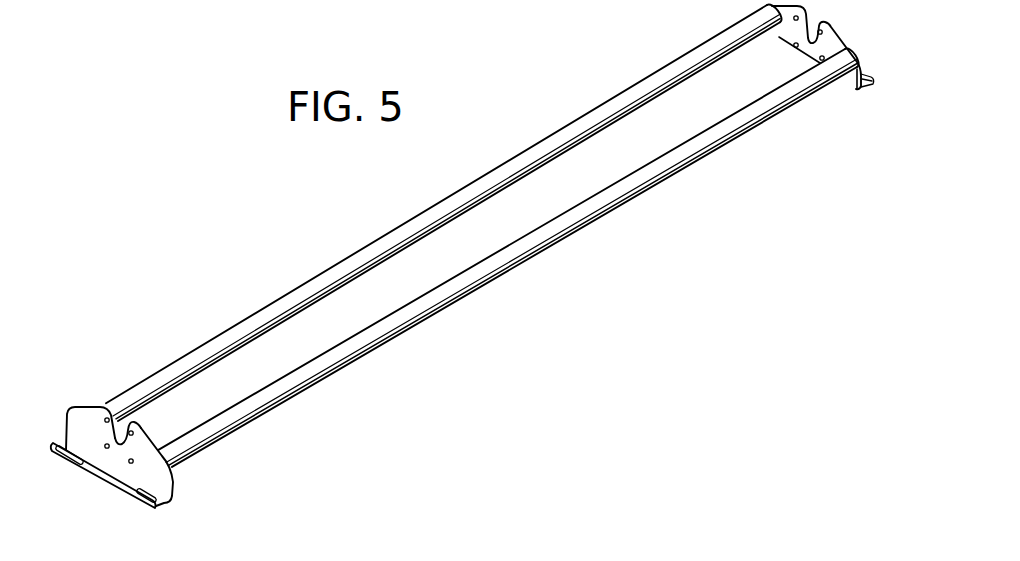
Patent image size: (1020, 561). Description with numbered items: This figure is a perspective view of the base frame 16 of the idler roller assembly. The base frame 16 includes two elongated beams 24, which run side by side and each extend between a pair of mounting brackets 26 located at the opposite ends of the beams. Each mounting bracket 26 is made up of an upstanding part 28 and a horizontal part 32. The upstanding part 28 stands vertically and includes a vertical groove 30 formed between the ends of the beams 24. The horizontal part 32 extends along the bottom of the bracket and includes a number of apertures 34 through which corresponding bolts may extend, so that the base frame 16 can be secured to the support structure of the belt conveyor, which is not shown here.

The base frame 16 is at (517, 311).
The elongated beams 24 is at (632, 112).
The mounting brackets 26 is at (86, 403).
The upstanding part 28 is at (173, 482).
The vertical groove 30 is at (129, 421).
The horizontal part 32 is at (111, 484).
The apertures 34 is at (157, 503).